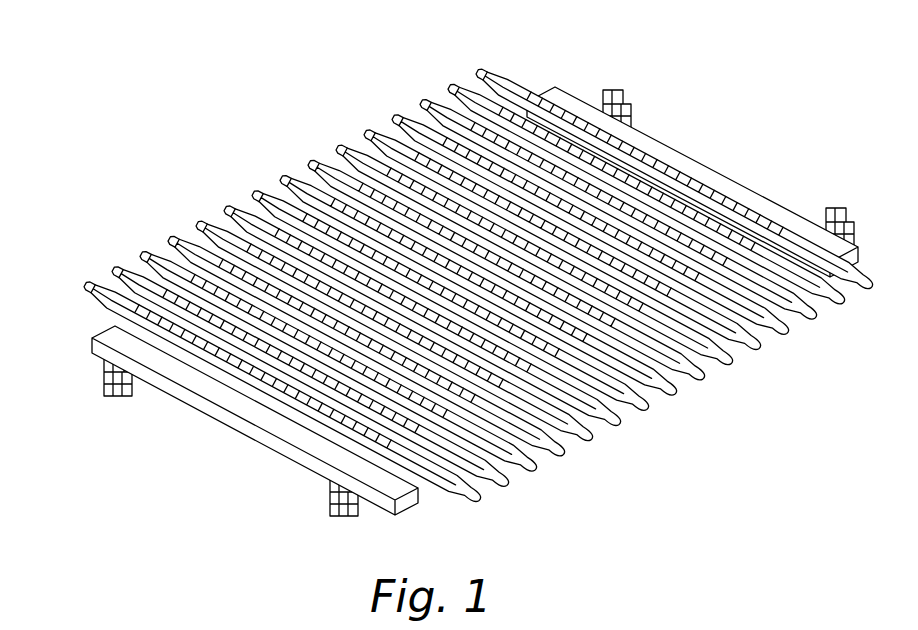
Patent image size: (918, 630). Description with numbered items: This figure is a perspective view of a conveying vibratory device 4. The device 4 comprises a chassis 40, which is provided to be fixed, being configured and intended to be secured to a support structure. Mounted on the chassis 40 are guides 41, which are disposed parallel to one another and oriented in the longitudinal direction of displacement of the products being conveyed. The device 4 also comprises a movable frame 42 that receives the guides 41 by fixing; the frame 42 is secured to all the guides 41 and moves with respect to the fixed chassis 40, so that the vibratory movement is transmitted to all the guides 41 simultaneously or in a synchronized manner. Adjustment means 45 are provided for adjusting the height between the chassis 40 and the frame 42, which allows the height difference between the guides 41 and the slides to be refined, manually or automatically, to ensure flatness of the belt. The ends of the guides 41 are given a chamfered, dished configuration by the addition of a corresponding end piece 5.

The vibratory device 4 is at (442, 285).
The end piece 5 is at (169, 238).
The chassis 40 is at (145, 386).
The guides 41 is at (335, 417).
The movable frame 42 is at (677, 162).
The adjustment means 45 is at (99, 384).